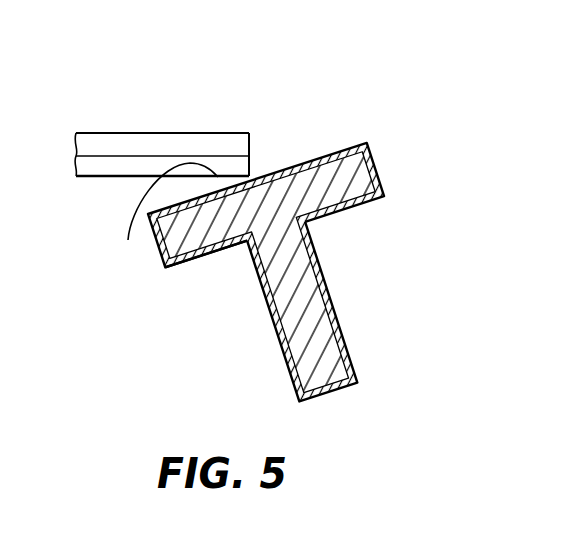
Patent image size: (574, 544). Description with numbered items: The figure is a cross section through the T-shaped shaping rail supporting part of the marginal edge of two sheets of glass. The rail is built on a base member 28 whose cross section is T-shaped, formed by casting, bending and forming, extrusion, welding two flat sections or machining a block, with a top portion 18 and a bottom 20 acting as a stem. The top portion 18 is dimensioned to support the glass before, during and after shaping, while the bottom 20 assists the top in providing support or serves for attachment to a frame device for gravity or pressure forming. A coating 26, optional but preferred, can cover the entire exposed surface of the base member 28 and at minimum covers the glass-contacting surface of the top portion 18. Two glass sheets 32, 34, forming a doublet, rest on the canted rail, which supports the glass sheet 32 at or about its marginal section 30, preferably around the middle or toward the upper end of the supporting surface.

The top portion 18 is at (377, 132).
The bottom 20 is at (320, 226).
The coating 26 is at (197, 268).
The base member 28 is at (287, 219).
The marginal section 30 is at (168, 218).
The glass sheet 32 is at (130, 140).
The glass sheet 34 is at (95, 170).